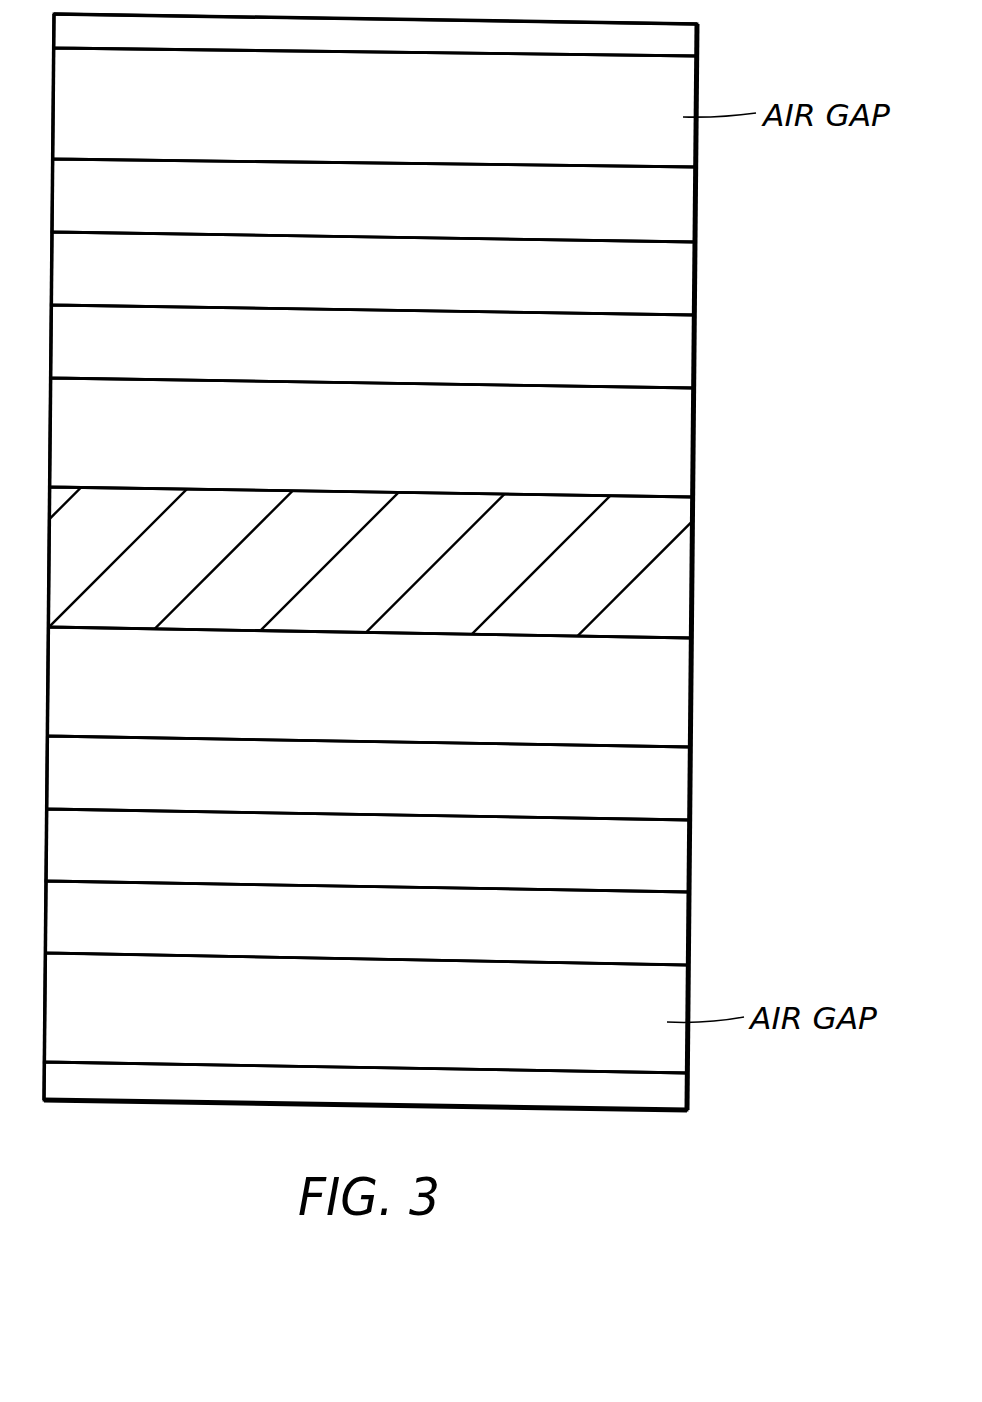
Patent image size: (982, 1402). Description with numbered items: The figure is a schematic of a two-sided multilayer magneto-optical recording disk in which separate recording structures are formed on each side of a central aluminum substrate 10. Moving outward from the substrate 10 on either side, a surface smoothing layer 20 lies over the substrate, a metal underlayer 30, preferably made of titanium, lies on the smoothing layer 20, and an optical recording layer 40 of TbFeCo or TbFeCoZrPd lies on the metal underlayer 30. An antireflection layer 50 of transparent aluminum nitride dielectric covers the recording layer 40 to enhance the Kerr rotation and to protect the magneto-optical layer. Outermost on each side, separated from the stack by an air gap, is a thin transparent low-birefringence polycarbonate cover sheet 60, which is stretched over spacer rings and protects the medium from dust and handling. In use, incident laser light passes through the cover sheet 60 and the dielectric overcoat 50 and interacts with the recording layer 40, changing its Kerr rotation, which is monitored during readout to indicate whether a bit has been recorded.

The substrate 10 is at (677, 575).
The surface smoothing layer 20 is at (675, 444).
The metal underlayer 30 is at (680, 355).
The optical recording layer 40 is at (680, 281).
The antireflection layer 50 is at (677, 210).
The cover sheet 60 is at (688, 41).